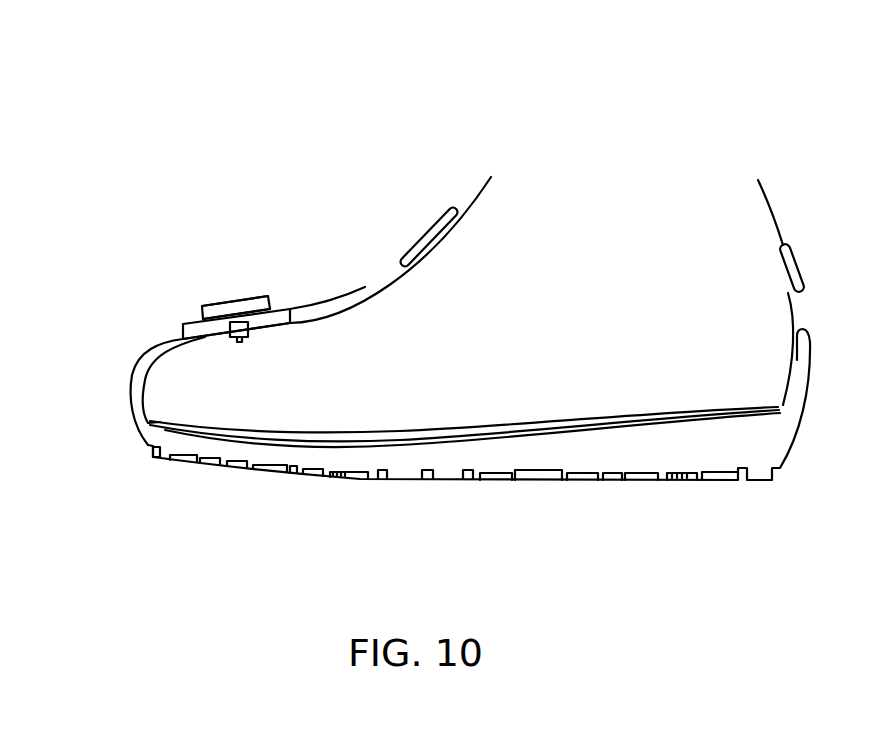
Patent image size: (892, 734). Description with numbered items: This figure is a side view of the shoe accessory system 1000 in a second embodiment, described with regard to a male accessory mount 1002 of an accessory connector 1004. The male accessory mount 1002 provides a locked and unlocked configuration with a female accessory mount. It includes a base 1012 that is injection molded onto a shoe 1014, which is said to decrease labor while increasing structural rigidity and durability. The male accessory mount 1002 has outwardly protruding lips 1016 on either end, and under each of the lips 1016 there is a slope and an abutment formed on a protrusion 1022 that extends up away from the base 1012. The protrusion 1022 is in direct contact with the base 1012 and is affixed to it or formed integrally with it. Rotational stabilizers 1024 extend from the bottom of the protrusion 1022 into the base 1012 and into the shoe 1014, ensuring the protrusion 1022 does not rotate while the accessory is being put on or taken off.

The shoe accessory system 1000 is at (141, 49).
The male accessory mount 1002 is at (242, 298).
The accessory connector 1004 is at (174, 282).
The base 1012 is at (272, 323).
The shoe 1014 is at (131, 406).
The outwardly protruding lips 1016 is at (265, 297).
The protrusion 1022 is at (210, 313).
The rotational stabilizers 1024 is at (245, 338).